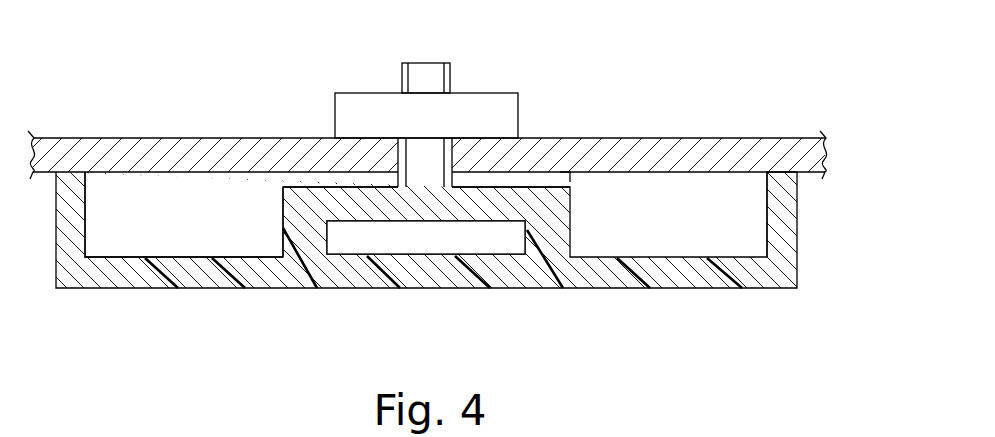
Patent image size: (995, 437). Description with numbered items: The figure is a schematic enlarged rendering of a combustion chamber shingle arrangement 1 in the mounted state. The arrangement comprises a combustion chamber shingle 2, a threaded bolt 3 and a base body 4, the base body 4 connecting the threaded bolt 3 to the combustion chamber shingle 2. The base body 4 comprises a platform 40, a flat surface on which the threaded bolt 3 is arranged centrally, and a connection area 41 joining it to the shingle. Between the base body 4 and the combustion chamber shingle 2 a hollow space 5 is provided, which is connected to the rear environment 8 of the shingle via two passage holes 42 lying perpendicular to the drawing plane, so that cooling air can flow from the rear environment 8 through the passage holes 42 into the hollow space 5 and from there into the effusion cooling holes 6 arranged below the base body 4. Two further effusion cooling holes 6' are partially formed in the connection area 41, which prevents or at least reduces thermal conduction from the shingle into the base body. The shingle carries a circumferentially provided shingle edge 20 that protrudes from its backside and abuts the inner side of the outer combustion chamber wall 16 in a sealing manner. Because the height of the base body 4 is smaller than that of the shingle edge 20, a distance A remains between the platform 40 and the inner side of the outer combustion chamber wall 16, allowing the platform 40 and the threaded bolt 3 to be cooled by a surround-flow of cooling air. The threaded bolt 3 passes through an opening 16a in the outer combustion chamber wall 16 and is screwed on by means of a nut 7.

The combustion chamber shingle arrangement 1 is at (145, 101).
The combustion chamber shingle 2 is at (598, 280).
The threaded bolt 3 is at (432, 78).
The base body 4 is at (287, 187).
The hollow space 5 is at (430, 243).
The effusion cooling holes 6 is at (443, 313).
The effusion cooling holes 6' is at (437, 299).
The nut 7 is at (372, 105).
The rear environment 8 is at (133, 227).
The outer combustion chamber wall 16 is at (615, 148).
The opening 16a is at (397, 158).
The shingle edge 20 is at (773, 217).
The platform 40 is at (322, 200).
The connection area 41 is at (283, 218).
The passage holes 42 is at (333, 240).
The distance A is at (560, 175).